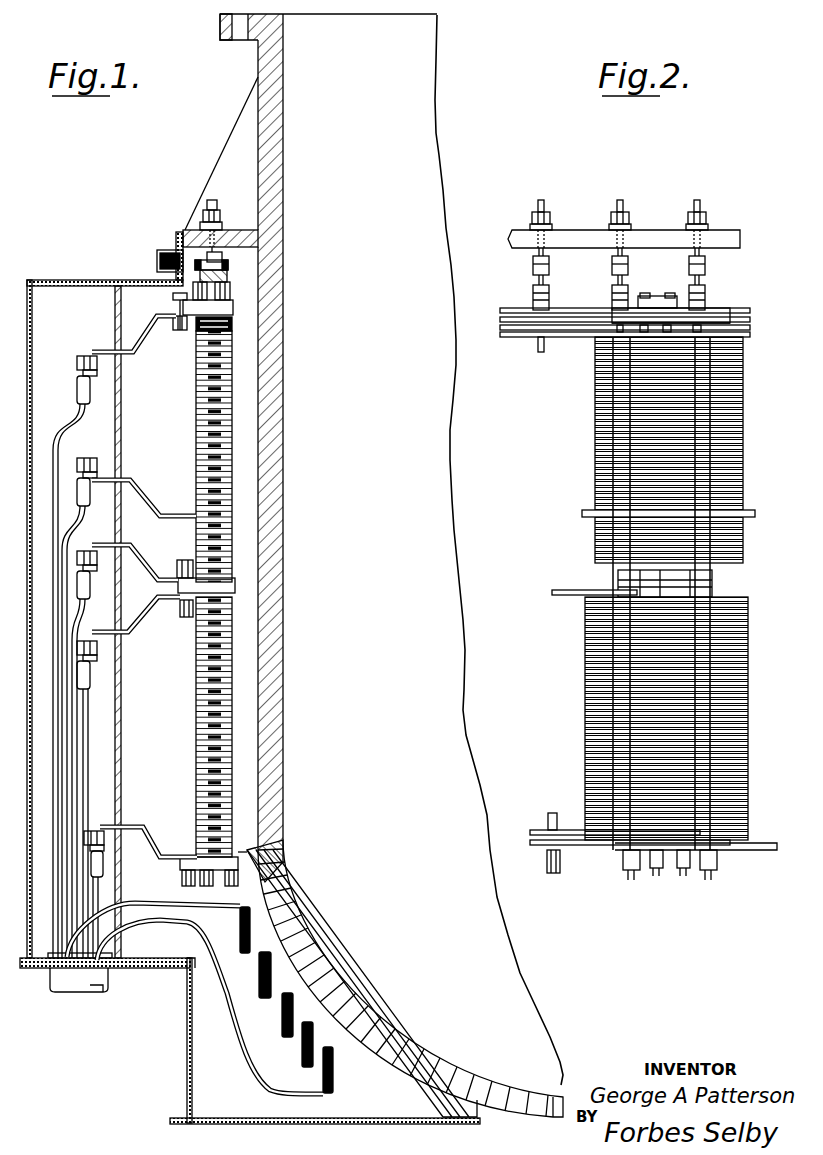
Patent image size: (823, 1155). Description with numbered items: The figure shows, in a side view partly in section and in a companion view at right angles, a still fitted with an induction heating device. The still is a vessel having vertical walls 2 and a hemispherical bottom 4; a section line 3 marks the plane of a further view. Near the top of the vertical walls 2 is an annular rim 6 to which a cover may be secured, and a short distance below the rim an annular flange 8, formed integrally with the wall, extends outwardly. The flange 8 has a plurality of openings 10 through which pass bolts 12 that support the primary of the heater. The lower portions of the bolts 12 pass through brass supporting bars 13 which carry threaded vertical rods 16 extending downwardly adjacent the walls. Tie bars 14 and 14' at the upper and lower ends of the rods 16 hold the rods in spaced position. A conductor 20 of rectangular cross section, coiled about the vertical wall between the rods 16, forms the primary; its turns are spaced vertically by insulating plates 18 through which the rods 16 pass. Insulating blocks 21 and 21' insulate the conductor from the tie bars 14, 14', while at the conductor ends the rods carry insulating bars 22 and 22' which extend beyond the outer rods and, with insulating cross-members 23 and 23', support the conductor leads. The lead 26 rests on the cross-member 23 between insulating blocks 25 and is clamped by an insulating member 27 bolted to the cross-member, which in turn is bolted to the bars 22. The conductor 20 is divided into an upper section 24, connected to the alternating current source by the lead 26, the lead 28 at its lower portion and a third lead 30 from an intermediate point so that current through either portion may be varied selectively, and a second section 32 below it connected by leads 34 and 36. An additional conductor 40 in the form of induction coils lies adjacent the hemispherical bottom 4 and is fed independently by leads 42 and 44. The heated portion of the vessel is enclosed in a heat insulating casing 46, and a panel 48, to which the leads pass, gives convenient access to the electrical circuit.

In FIG. 1, the vertical walls 2 is at (276, 410).
In FIG. 1, the section line 3 is at (170, 291).
In FIG. 1, the hemispherical bottom 4 is at (411, 1045).
In FIG. 1, the annular rim 6 is at (219, 31).
In FIG. 1, the annular flange 8 is at (186, 232).
In FIG. 2, the annular flange 8 is at (571, 232).
In FIG. 1, the openings 10 is at (229, 232).
In FIG. 1, the bolts 12 is at (224, 256).
In FIG. 2, the bolts 12 is at (622, 209).
In FIG. 1, the brass supporting bars 13 is at (230, 267).
In FIG. 1, the tie bar 14 is at (226, 293).
In FIG. 2, the tie bar 14 is at (601, 297).
In FIG. 1, the vertical rods 16 is at (229, 278).
In FIG. 2, the vertical rods 16 is at (627, 278).
In FIG. 1, the insulating plates 18 is at (232, 339).
In FIG. 1, the conductor 20 is at (199, 394).
In FIG. 2, the conductor 20 is at (579, 338).
In FIG. 2, the insulating block 21 is at (559, 315).
In FIG. 1, the insulating bar 22 is at (218, 457).
In FIG. 2, the insulating bar 22 is at (662, 302).
In FIG. 1, the insulating cross-member 23 is at (167, 321).
In FIG. 2, the insulating cross-member 23 is at (684, 314).
In FIG. 1, the upper section 24 is at (236, 452).
In FIG. 2, the upper section 24 is at (592, 463).
In FIG. 2, the insulating block 25 is at (676, 304).
In FIG. 1, the lead 26 is at (140, 352).
In FIG. 2, the insulating member 27 is at (660, 302).
In FIG. 1, the lead 28 is at (150, 562).
In FIG. 1, the third lead 30 is at (148, 500).
In FIG. 1, the second section 32 is at (242, 700).
In FIG. 2, the second section 32 is at (588, 701).
In FIG. 1, the lead 34 is at (144, 629).
In FIG. 1, the lead 36 is at (150, 824).
In FIG. 1, the conductor 40 is at (257, 987).
In FIG. 1, the lead 42 is at (153, 901).
In FIG. 1, the lead 44 is at (194, 935).
In FIG. 1, the heat insulating casing 46 is at (187, 1025).
In FIG. 1, the panel 48 is at (115, 319).
In FIG. 1, the tie bar 14' is at (205, 885).
In FIG. 2, the tie bar 14' is at (536, 873).
In FIG. 2, the insulating block 21' is at (525, 843).
In FIG. 1, the insulating bar 22' is at (223, 848).
In FIG. 2, the insulating bar 22' is at (685, 870).
In FIG. 2, the insulating cross-member 23' is at (655, 852).